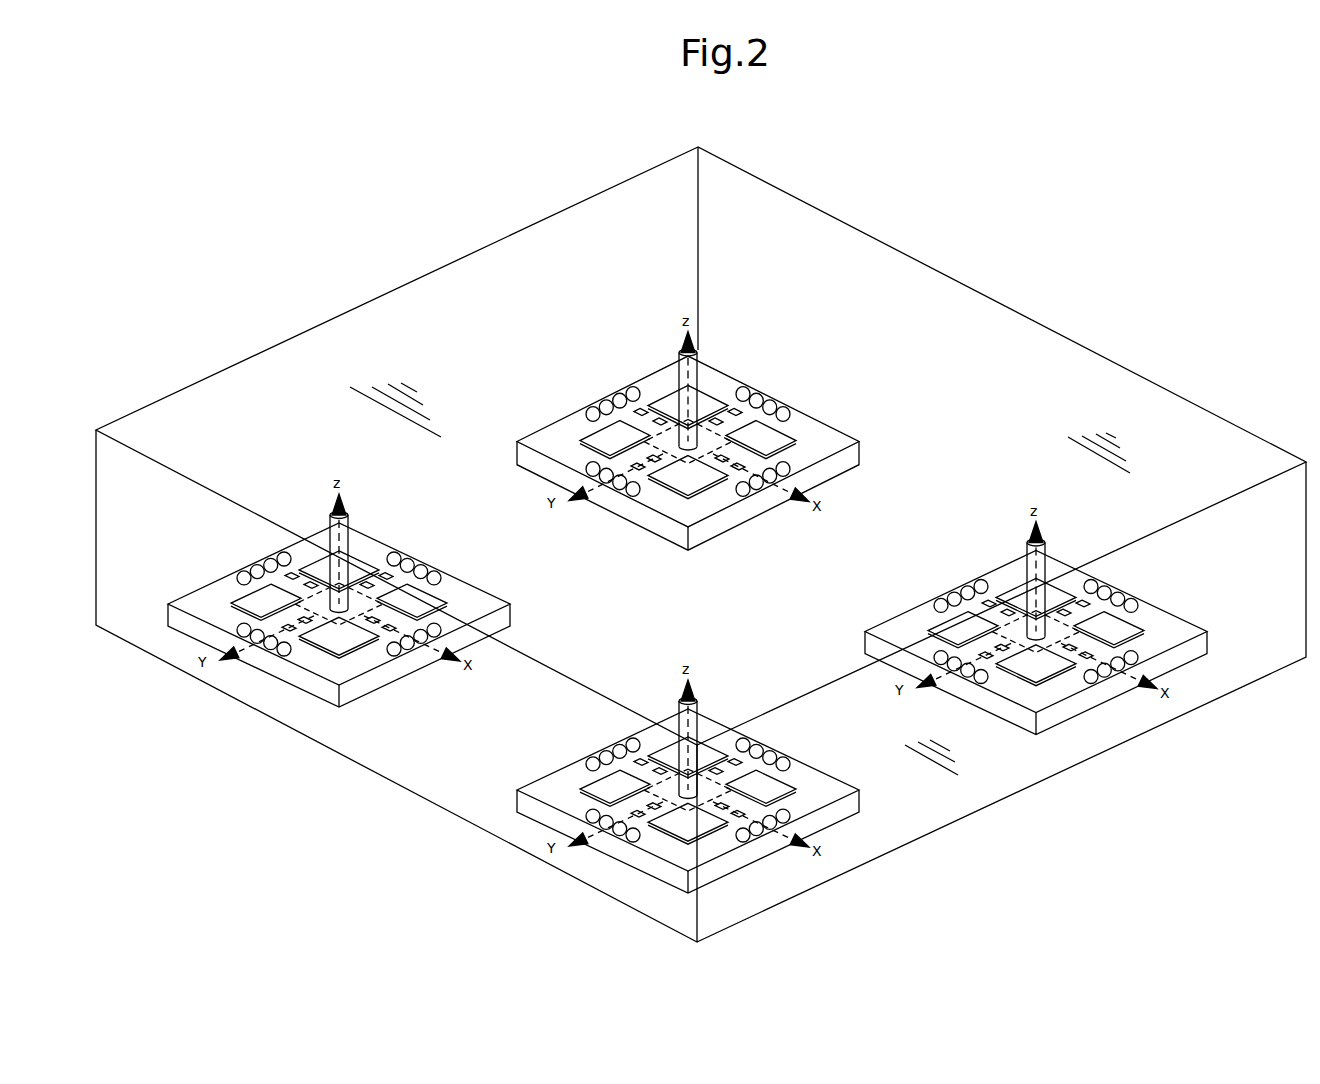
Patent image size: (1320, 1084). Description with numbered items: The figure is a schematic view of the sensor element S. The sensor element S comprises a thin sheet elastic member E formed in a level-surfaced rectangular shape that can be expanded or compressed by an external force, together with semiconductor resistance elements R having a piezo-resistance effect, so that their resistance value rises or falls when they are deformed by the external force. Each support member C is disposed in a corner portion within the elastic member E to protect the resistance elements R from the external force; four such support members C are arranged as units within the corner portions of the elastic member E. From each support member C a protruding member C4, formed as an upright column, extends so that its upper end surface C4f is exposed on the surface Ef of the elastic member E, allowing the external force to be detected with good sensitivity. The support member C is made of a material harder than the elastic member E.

The sensor element S is at (701, 543).
The elastic member E is at (701, 544).
The surface of the elastic member Ef is at (1101, 390).
The support member C is at (688, 382).
The protruding member C4 is at (733, 297).
The upper end surface C4f is at (688, 353).
The resistance element R is at (640, 413).